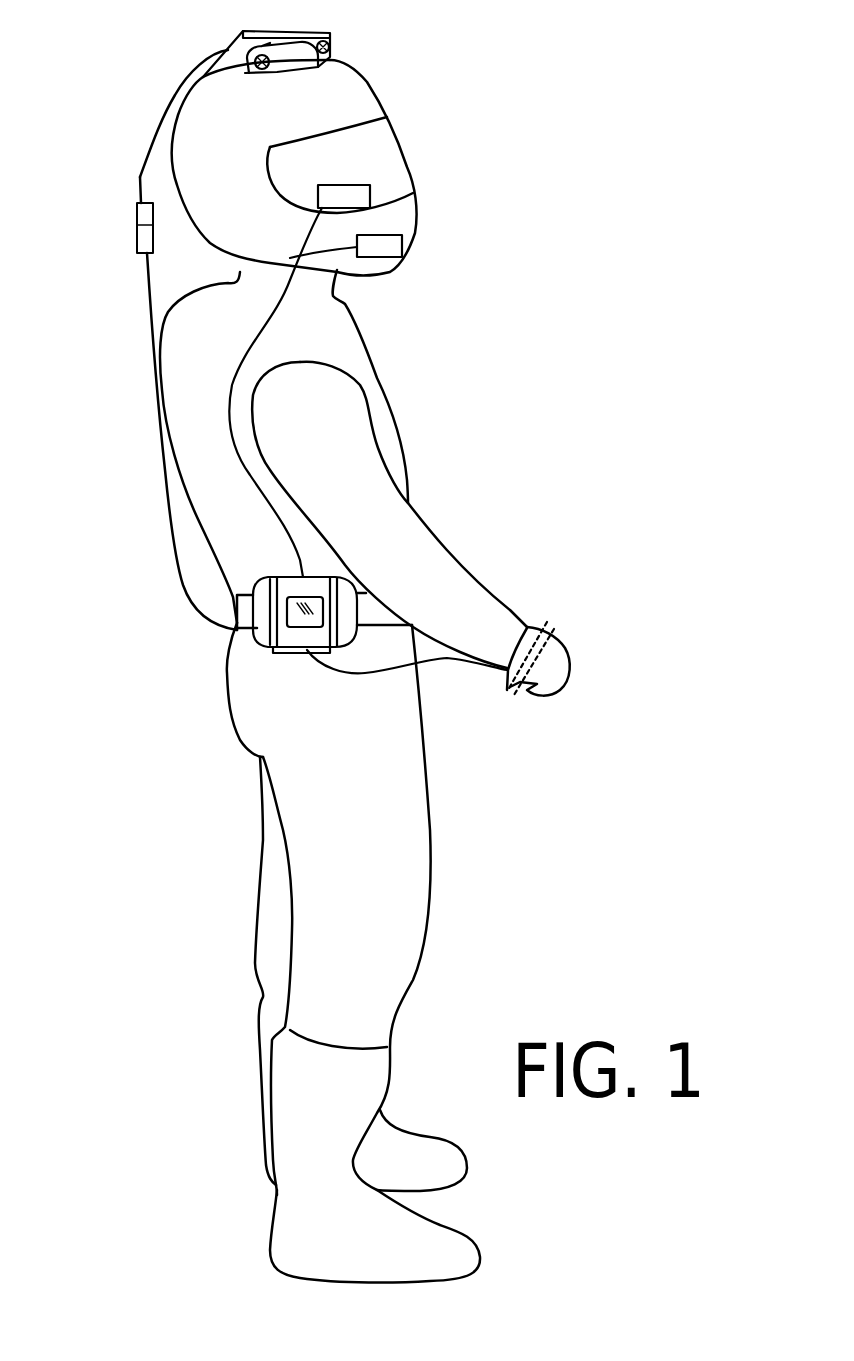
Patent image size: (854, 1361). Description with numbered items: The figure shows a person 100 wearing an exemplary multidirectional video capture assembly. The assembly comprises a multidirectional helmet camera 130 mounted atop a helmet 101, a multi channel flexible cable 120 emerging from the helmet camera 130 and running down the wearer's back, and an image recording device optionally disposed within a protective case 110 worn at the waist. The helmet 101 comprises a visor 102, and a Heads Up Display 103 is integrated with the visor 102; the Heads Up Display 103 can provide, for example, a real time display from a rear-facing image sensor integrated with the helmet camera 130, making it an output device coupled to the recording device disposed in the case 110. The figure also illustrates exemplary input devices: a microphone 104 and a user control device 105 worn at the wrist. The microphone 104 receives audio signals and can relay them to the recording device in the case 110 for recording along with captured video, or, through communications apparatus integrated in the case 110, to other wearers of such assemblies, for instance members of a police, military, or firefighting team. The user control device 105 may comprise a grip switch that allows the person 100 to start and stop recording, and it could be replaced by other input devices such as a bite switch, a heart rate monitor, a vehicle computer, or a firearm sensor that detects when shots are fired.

The person 100 is at (463, 255).
The helmet 101 is at (347, 97).
The visor 102 is at (378, 148).
The Heads Up Display (HUD) 103 is at (299, 381).
The microphone 104 is at (346, 246).
The user control device 105 is at (552, 624).
The protective case 110 is at (257, 637).
The multi channel flexible cable 120 is at (140, 177).
The multidirectional helmet camera 130 is at (297, 33).